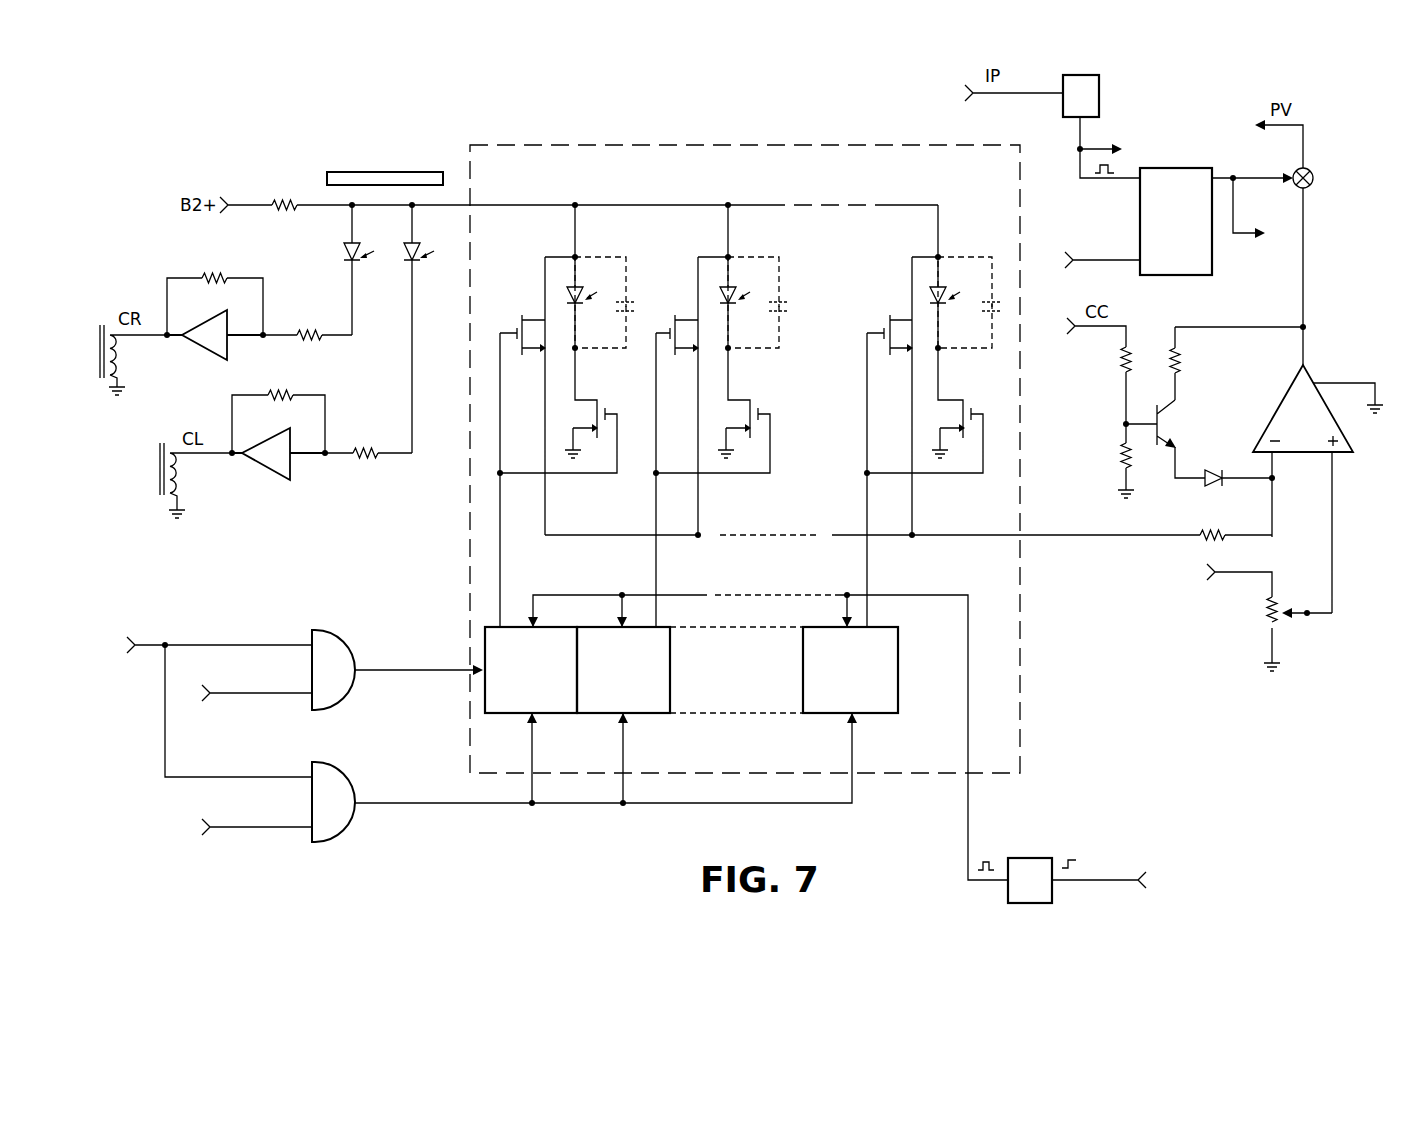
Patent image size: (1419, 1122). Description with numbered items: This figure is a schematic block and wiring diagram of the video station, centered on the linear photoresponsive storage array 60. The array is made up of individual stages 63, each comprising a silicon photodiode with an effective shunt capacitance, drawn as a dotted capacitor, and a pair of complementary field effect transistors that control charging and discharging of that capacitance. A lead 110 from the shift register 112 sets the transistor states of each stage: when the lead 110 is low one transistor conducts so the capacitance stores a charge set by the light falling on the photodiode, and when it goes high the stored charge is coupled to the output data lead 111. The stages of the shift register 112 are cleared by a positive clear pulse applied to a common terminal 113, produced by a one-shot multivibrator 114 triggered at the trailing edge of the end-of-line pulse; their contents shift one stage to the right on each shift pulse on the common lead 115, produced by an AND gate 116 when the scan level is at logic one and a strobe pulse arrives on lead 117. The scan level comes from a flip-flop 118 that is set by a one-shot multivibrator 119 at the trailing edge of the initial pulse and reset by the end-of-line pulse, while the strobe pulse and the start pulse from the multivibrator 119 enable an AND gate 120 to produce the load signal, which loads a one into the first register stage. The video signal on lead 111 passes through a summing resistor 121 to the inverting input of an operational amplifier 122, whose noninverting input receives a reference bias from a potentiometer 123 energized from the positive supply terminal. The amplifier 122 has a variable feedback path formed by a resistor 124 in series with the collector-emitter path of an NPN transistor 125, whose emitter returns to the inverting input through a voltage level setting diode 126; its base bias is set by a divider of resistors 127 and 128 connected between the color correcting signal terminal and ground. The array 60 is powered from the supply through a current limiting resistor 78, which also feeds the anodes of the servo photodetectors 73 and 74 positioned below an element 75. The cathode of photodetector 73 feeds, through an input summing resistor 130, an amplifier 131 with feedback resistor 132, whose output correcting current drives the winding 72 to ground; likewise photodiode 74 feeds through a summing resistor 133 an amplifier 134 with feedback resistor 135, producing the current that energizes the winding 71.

The linear photoresponsive storage array 60 is at (876, 145).
The stage 63 is at (600, 257).
The winding 71 is at (180, 491).
The winding 72 is at (118, 369).
The photodetector 73 is at (347, 246).
The photodiode 74 is at (418, 250).
The optical element 75 is at (416, 171).
The current limiting resistor 78 is at (286, 203).
The lead 110 is at (499, 489).
The output data lead 111 is at (1117, 540).
The shift register 112 is at (731, 684).
The common terminal 113 is at (969, 676).
The one-shot multivibrator 114 is at (1033, 857).
The common lead 115 is at (481, 806).
The AND gate 116 is at (345, 818).
The lead 117 is at (280, 777).
The flip-flop 118 is at (1167, 168).
The one-shot multivibrator 119 is at (1103, 103).
The AND gate 120 is at (341, 640).
The summing resistor 121 is at (1209, 532).
The operational amplifier 122 is at (1291, 425).
The potentiometer 123 is at (1285, 626).
The resistor 124 is at (1182, 370).
The NPN transistor 125 is at (1166, 429).
The voltage level setting diode 126 is at (1216, 469).
The resistor 127 is at (1119, 360).
The resistor 128 is at (1119, 452).
The input summing resistor 130 is at (308, 333).
The amplifier 131 is at (229, 349).
The feedback resistor 132 is at (226, 277).
The summing resistor 133 is at (374, 459).
The amplifier 134 is at (291, 467).
The feedback resistor 135 is at (296, 394).